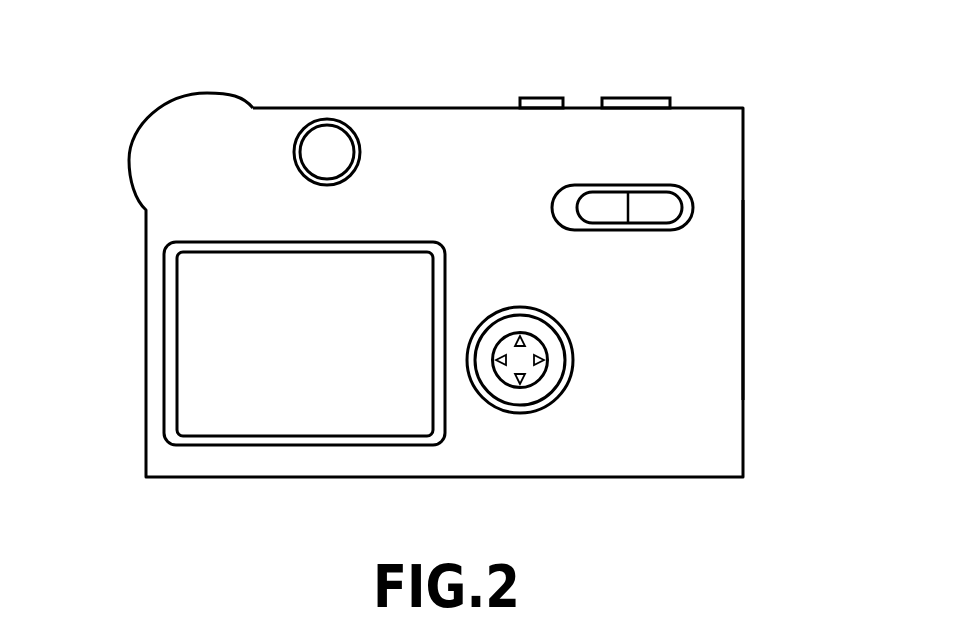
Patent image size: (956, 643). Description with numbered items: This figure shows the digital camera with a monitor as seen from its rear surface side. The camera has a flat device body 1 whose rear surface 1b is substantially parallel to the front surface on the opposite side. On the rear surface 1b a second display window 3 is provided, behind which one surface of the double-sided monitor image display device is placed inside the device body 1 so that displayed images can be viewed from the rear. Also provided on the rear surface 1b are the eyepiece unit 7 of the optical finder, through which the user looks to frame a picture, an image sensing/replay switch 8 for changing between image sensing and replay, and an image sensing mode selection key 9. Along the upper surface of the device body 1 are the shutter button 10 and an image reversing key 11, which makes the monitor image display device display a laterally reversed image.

The device body 1 is at (758, 150).
The rear surface 1b is at (728, 284).
The second display window 3 is at (195, 368).
The eyepiece unit 7 is at (323, 140).
The image sensing/replay switch 8 is at (653, 203).
The image sensing mode selection key 9 is at (535, 345).
The shutter button 10 is at (632, 97).
The image reversing key 11 is at (540, 97).